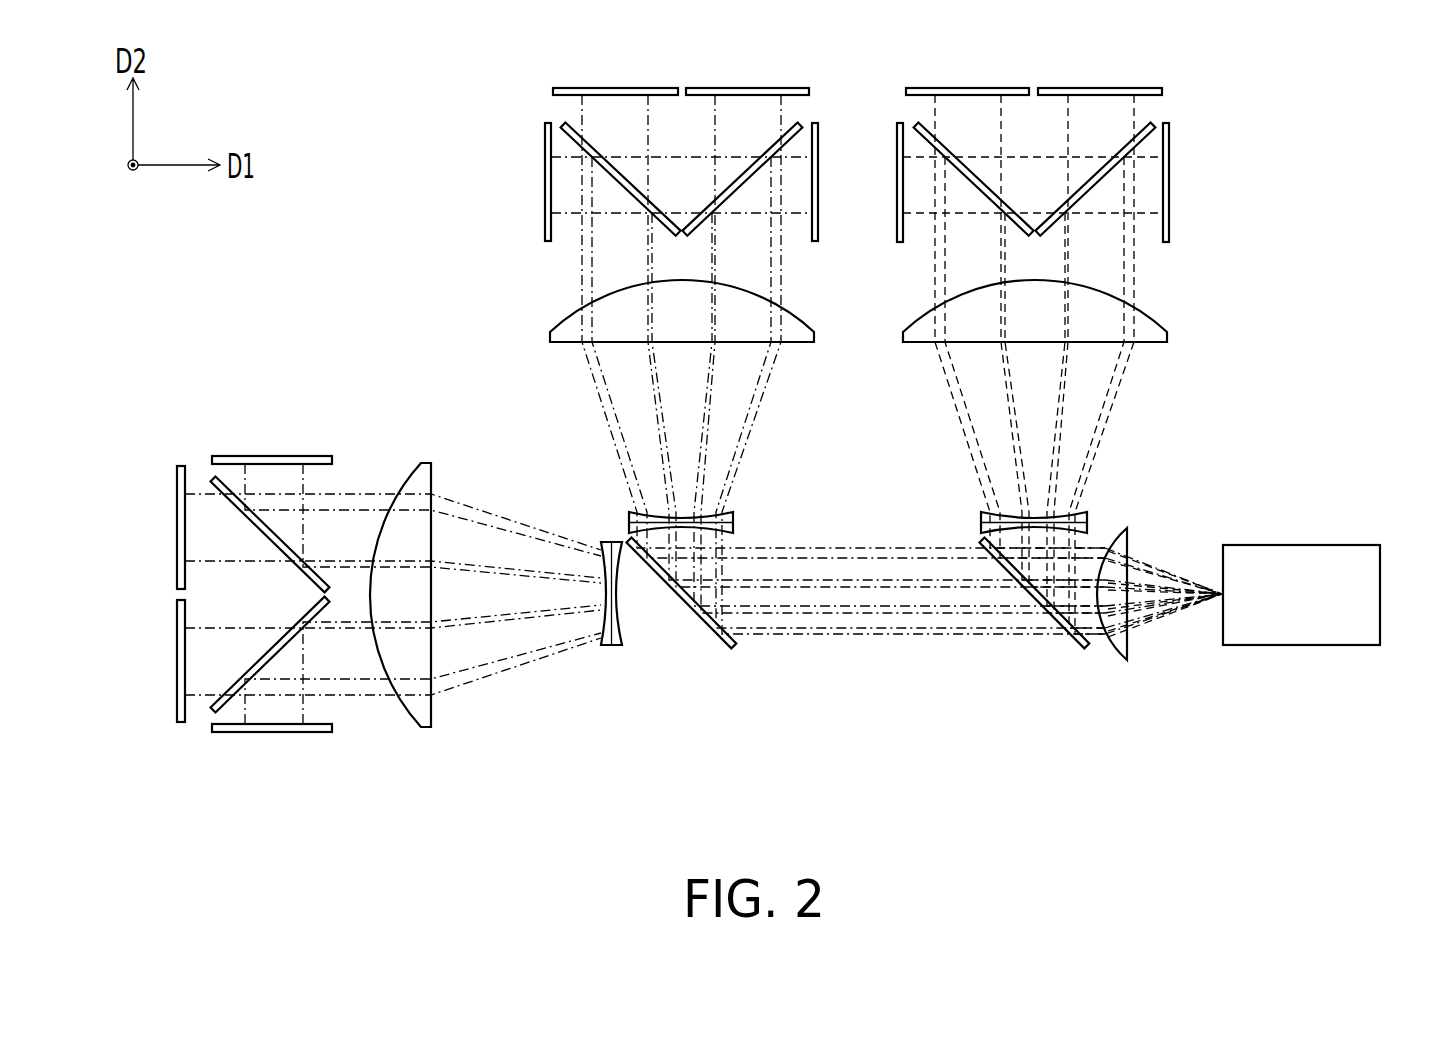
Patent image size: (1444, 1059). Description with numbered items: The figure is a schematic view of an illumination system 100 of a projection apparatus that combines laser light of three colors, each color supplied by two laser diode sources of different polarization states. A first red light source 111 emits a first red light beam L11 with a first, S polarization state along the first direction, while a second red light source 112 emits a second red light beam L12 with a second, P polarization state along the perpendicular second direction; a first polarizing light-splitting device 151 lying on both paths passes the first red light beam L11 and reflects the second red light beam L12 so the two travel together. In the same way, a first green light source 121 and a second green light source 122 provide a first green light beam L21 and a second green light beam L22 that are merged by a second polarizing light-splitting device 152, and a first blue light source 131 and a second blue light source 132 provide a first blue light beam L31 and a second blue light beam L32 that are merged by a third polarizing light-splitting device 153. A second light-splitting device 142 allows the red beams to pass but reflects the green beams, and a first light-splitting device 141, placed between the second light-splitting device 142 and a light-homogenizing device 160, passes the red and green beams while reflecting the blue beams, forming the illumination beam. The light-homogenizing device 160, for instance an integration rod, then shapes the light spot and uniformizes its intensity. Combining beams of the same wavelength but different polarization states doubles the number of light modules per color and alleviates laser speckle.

The illumination system 100 is at (1420, 843).
The first red light source 111 is at (170, 466).
The second red light source 112 is at (275, 456).
The first green light source 121 is at (809, 88).
The second green light source 122 is at (545, 184).
The first blue light source 131 is at (1162, 88).
The second blue light source 132 is at (897, 170).
The first light-splitting device 141 is at (1085, 646).
The second light-splitting device 142 is at (733, 646).
The first polarizing light-splitting device 151 is at (228, 480).
The second polarizing light-splitting device 152 is at (563, 125).
The third polarizing light-splitting device 153 is at (916, 125).
The light-homogenizing device 160 is at (1322, 552).
The first red light beam L11 is at (203, 493).
The second red light beam L12 is at (303, 477).
The first green light beam L21 is at (577, 105).
The second green light beam L22 is at (565, 237).
The first blue light beam L31 is at (1137, 110).
The second blue light beam L32 is at (1152, 215).